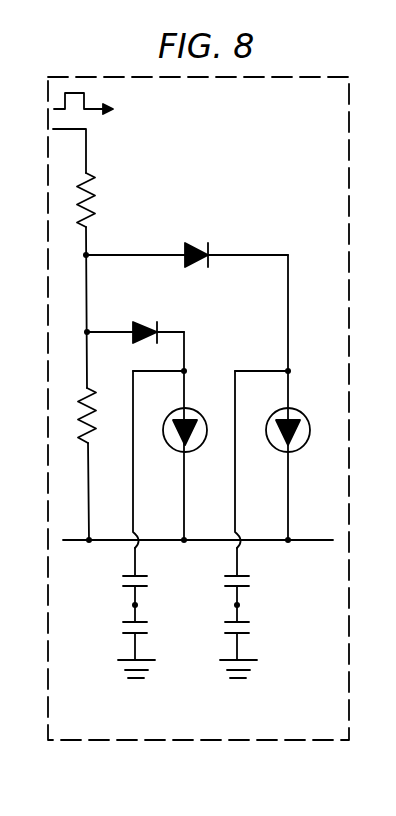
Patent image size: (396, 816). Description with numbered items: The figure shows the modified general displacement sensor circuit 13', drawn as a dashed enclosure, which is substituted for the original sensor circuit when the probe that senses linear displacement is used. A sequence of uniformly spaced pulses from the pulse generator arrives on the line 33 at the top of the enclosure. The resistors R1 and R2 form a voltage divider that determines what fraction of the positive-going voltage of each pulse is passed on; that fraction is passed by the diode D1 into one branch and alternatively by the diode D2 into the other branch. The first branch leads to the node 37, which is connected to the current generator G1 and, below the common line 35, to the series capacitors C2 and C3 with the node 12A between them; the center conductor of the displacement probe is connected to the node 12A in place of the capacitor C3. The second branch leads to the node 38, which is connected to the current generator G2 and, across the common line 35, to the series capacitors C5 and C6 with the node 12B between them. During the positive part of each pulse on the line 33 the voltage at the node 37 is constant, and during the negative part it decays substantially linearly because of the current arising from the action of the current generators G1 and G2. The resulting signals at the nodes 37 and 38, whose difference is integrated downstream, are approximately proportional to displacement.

The modified general displacement sensor circuit 13' is at (198, 390).
The line 33 is at (86, 145).
The resistor R1 is at (103, 200).
The resistor R2 is at (98, 390).
The diode D1 is at (135, 318).
The diode D2 is at (187, 240).
The node 37 is at (187, 368).
The node 38 is at (290, 369).
The current generator G1 is at (192, 443).
The current generator G2 is at (296, 443).
The common line 35 is at (110, 543).
The capacitor C2 is at (117, 576).
The capacitor C3 is at (116, 632).
The capacitor C5 is at (252, 576).
The capacitor C6 is at (253, 632).
The node 12A is at (135, 605).
The node 12B is at (237, 605).